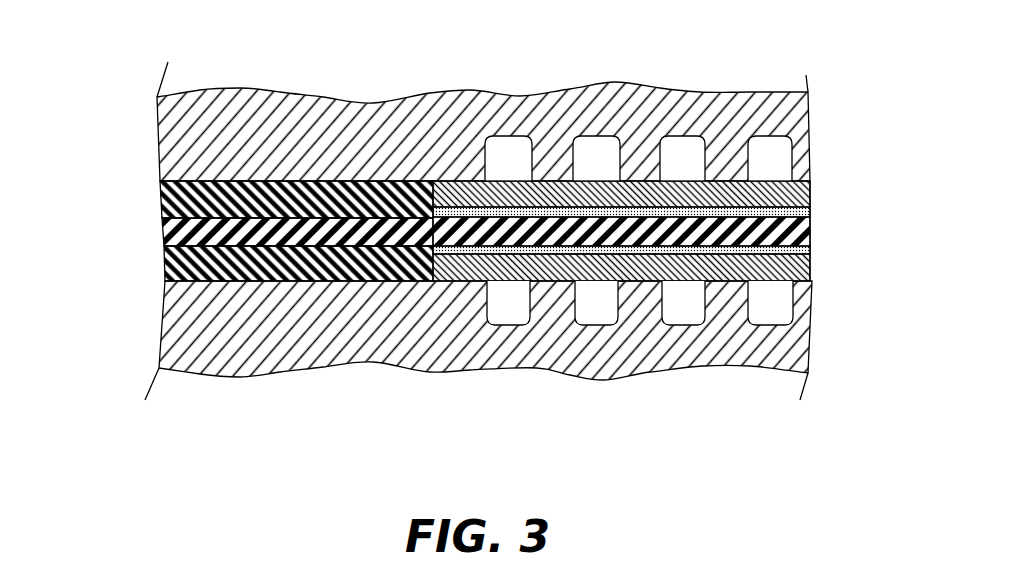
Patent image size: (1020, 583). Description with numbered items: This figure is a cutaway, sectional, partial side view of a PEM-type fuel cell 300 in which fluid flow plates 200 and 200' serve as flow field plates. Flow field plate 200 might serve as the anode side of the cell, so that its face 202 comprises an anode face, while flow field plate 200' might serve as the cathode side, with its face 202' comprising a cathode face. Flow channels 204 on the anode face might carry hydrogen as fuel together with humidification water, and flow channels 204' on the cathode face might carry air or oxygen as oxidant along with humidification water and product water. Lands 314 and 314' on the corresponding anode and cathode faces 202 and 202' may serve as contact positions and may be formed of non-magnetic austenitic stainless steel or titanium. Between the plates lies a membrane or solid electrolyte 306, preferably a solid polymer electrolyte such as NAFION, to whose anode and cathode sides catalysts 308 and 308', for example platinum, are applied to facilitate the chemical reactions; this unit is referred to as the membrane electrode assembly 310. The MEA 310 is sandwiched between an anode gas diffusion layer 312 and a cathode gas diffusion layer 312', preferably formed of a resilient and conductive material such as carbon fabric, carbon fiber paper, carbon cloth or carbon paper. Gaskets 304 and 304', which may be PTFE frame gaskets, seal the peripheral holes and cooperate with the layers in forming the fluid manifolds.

The fuel cell 300 is at (932, 38).
The fluid flow plate 200 is at (478, 366).
The fluid flow plate 200' is at (483, 96).
The fluid flow face 202 is at (742, 366).
The fluid flow face 202' is at (745, 96).
The flow channel 204 is at (640, 366).
The flow channel 204' is at (638, 96).
The gasket 304 is at (234, 279).
The gasket 304' is at (233, 183).
The solid electrolyte 306 is at (798, 232).
The catalyst 308 is at (680, 262).
The catalyst 308' is at (684, 194).
The membrane electrode assembly 310 is at (815, 238).
The anode gas diffusion layer 312 is at (680, 283).
The cathode gas diffusion layer 312' is at (684, 159).
The land 314 is at (531, 366).
The land 314' is at (532, 96).